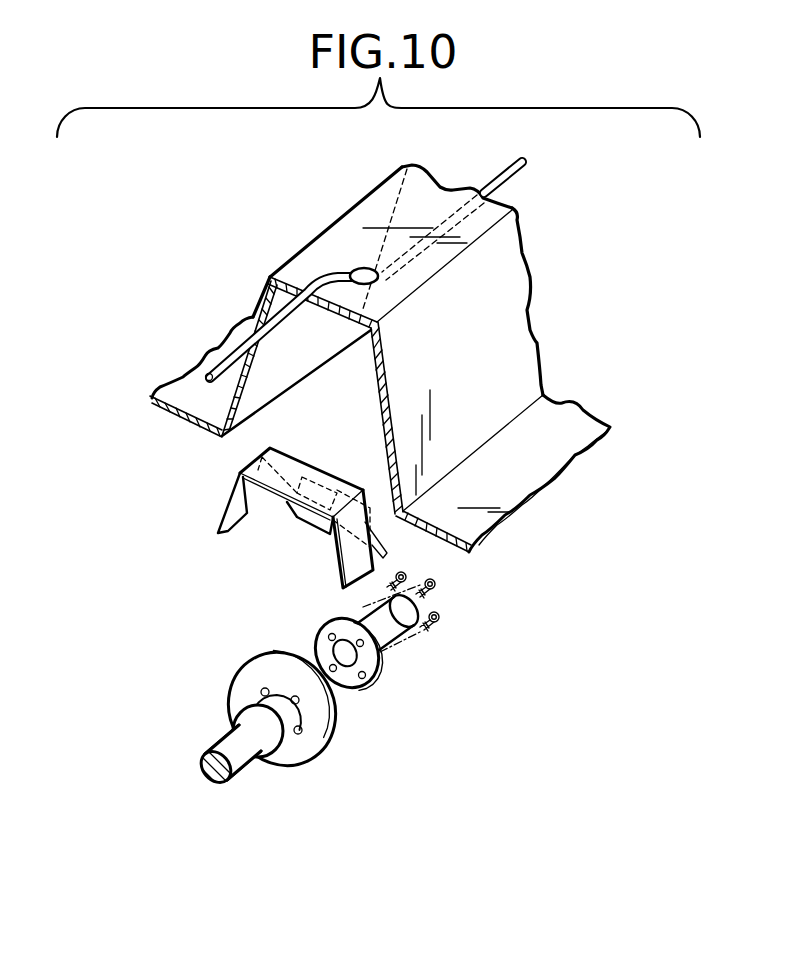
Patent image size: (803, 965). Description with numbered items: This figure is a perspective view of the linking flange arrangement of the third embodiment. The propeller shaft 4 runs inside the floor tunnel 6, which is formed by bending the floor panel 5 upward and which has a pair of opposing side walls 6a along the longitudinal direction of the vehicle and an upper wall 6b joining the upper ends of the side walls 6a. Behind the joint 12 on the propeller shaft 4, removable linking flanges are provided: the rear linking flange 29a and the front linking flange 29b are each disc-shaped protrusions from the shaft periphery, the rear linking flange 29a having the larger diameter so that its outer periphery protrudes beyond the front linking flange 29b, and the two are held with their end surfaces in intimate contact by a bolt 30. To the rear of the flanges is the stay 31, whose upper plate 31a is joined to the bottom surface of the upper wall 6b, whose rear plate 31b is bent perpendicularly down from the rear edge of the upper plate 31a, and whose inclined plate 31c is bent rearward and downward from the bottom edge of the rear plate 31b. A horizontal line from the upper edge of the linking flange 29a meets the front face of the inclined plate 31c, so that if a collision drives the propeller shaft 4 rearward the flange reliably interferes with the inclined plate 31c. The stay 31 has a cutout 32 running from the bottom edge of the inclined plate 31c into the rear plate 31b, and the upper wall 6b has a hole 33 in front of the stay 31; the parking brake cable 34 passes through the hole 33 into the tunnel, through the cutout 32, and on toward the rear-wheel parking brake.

The propeller shaft 4 is at (218, 740).
The floor panel 5 is at (565, 415).
The floor tunnel 6 is at (430, 188).
The side walls 6a is at (520, 292).
The upper wall 6b is at (373, 203).
The joint 12 is at (250, 712).
The rear linking flange 29a is at (320, 768).
The front linking flange 29b is at (378, 684).
The bolt 30 is at (408, 572).
The stay 31 is at (262, 505).
The upper plate 31a is at (283, 500).
The rear plate 31b is at (262, 452).
The inclined plate 31c is at (309, 522).
The cutout 32 is at (312, 472).
The hole 33 is at (357, 267).
The parking brake cable 34 is at (228, 340).